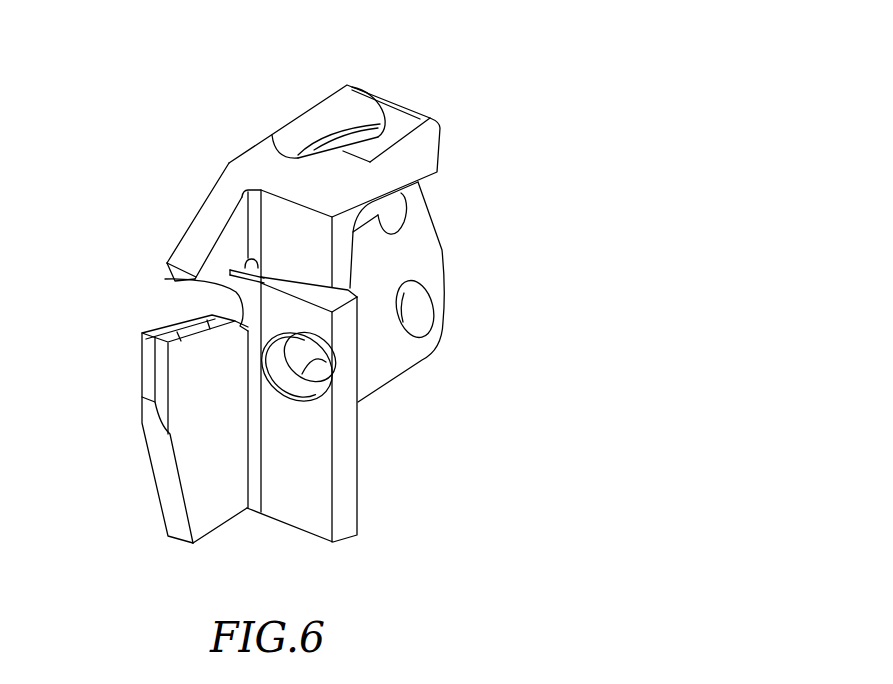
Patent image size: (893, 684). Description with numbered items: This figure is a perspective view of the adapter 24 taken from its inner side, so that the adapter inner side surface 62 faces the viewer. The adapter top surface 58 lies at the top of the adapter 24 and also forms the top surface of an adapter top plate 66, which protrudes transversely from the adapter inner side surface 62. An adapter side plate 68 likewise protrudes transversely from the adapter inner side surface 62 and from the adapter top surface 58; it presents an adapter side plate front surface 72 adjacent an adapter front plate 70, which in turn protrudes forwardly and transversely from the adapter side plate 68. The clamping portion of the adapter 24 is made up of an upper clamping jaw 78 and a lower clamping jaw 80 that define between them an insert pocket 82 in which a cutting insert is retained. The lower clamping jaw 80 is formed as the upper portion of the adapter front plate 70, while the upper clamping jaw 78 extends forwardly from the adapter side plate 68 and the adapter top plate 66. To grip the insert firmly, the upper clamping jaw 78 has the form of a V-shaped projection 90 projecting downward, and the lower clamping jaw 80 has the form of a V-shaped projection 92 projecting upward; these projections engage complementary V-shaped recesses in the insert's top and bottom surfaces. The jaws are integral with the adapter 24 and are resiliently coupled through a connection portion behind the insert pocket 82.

The adapter 24 is at (193, 67).
The adapter top surface 58 is at (395, 118).
The adapter top plate 66 is at (448, 132).
The upper clamping jaw 78 is at (174, 223).
The adapter inner side surface 62 is at (422, 225).
The V-shaped projection 90 is at (168, 279).
The insert pocket 82 is at (190, 298).
The V-shaped projection 92 is at (138, 343).
The lower clamping jaw 80 is at (128, 391).
The adapter front plate 70 is at (147, 496).
The adapter side plate front surface 72 is at (288, 500).
The adapter side plate 68 is at (364, 529).